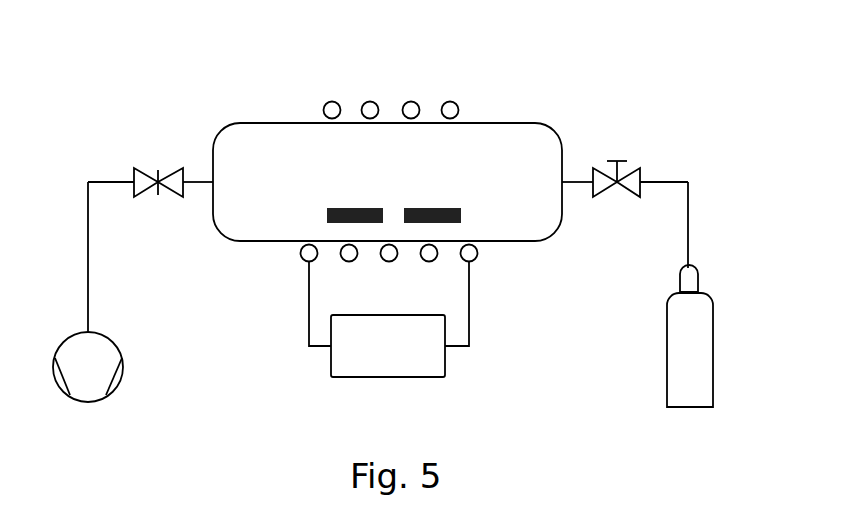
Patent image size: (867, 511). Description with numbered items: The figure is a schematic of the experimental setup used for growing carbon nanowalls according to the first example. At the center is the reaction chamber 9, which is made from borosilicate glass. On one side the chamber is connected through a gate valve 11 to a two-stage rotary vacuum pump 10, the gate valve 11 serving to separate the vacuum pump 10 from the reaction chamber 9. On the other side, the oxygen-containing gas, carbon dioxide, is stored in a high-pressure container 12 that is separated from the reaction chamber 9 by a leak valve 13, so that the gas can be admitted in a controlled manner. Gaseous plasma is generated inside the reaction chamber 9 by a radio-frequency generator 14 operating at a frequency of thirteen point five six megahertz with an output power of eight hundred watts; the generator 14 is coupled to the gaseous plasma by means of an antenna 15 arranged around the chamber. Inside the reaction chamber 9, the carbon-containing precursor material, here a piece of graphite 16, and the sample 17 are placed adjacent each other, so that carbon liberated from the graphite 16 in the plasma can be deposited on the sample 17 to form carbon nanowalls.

The reaction chamber 9 is at (401, 143).
The vacuum pump 10 is at (122, 292).
The gate valve 11 is at (150, 148).
The high-pressure container 12 is at (638, 294).
The leak valve 13 is at (646, 144).
The radio-frequency generator 14 is at (350, 321).
The antenna 15 is at (391, 77).
The graphite 16 is at (289, 131).
The sample 17 is at (496, 254).